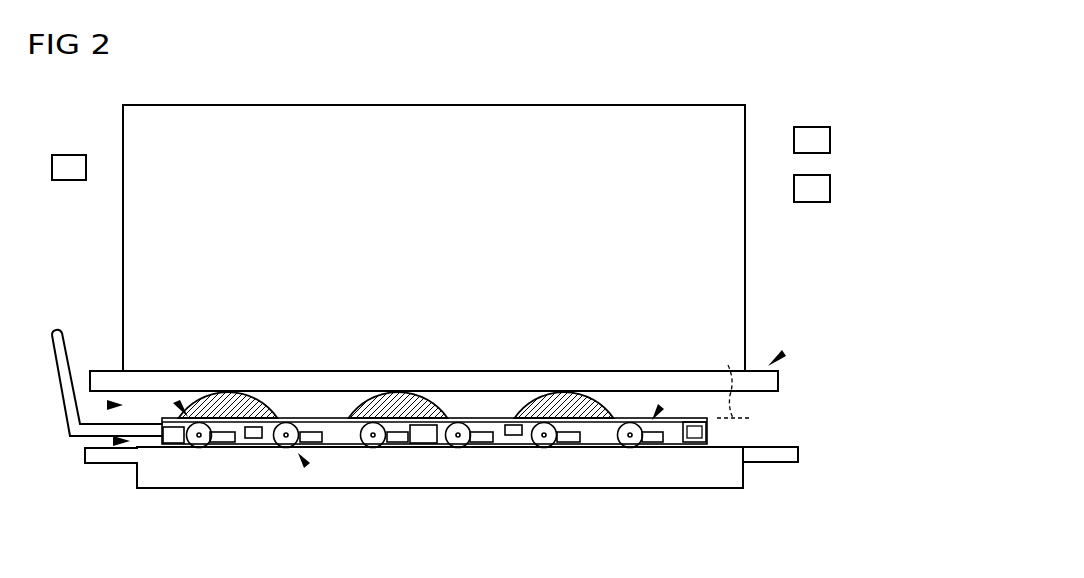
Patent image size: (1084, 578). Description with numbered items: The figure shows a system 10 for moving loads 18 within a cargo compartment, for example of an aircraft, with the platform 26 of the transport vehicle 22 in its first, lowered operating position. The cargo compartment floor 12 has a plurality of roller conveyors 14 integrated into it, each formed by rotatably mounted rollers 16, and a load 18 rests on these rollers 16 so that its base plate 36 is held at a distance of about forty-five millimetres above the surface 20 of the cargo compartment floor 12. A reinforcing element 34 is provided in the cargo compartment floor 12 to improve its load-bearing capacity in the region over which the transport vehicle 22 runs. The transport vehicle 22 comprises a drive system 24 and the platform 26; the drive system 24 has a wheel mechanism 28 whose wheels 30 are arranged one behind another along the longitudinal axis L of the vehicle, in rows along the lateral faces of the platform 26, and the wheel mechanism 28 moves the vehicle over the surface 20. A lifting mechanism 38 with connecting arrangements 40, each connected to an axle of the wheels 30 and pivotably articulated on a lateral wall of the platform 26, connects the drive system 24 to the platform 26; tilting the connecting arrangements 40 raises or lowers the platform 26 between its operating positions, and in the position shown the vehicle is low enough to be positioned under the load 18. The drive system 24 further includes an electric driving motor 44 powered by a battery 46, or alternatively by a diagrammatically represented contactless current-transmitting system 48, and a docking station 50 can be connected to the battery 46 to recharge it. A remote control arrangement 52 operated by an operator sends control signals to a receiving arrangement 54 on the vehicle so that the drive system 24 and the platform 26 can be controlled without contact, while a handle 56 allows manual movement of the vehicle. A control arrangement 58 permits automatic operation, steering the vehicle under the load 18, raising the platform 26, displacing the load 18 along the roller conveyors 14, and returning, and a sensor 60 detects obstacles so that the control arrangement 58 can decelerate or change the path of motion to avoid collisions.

The system for moving loads 10 is at (783, 353).
The cargo compartment floor 12 is at (770, 463).
The roller conveyors 14 is at (108, 405).
The rollers 16 is at (228, 395).
The load 18 is at (745, 162).
The surface of the cargo compartment floor 20 is at (732, 445).
The transport vehicle 22 is at (306, 463).
The drive system 24 is at (658, 407).
The platform 26 is at (343, 430).
The wheel mechanism 28 is at (114, 441).
The wheels 30 is at (200, 448).
The reinforcing element 34 is at (730, 478).
The base plate 36 is at (482, 384).
The lifting mechanism 38 is at (177, 405).
The connecting arrangements 40 is at (226, 444).
The electric driving motor 44 is at (426, 424).
The battery 46 is at (692, 421).
The contactless current-transmitting system 48 is at (810, 127).
The docking station 50 is at (814, 202).
The remote control arrangement 52 is at (68, 180).
The receiving arrangement 54 is at (170, 446).
The handle 56 is at (60, 340).
The control arrangement 58 is at (253, 426).
The sensor 60 is at (514, 424).
The longitudinal axis L is at (733, 377).